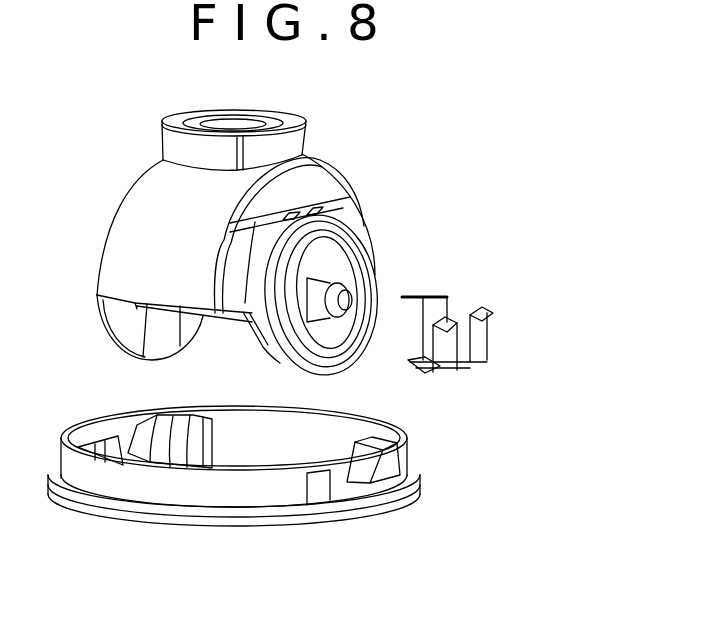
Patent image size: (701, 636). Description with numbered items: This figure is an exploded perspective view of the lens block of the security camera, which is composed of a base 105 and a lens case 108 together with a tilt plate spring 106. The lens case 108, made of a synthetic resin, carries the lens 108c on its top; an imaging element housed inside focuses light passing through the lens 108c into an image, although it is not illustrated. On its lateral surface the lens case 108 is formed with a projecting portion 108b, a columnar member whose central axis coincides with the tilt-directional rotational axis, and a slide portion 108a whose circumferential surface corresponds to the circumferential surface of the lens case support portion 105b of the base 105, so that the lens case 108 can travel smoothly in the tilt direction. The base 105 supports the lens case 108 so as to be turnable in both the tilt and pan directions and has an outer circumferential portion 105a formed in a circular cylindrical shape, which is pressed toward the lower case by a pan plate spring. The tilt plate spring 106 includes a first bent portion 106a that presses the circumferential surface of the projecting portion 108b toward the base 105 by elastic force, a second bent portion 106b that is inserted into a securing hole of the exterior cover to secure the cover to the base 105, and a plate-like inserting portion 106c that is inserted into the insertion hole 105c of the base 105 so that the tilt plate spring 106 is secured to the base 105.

The lens case 108 is at (150, 192).
The slide portion 108a is at (352, 220).
The projecting portion 108b is at (326, 281).
The lens 108c is at (240, 118).
The tilt plate spring 106 is at (486, 340).
The bent portion 106a is at (423, 297).
The bent portion 106b is at (487, 309).
The inserting portion 106c is at (441, 378).
The base 105 is at (93, 521).
The outer circumferential portion 105a is at (173, 526).
The lens case support portion 105b is at (173, 445).
The insertion hole 105c is at (377, 485).